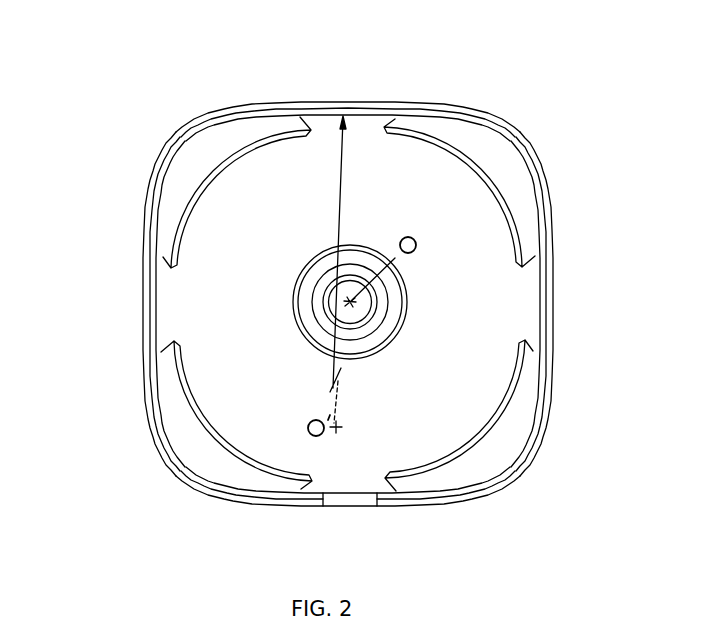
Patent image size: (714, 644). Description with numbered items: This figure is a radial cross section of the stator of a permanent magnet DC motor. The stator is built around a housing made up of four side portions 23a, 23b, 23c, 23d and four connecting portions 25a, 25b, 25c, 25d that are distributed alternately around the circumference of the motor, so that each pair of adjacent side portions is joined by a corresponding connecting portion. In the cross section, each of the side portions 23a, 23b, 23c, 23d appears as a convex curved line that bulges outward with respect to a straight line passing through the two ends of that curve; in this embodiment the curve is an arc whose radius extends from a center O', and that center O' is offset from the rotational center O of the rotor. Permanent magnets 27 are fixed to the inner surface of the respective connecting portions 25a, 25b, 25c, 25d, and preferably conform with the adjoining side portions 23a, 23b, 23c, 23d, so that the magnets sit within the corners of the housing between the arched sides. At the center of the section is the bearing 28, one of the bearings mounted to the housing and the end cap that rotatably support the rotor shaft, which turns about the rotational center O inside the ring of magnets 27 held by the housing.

The side portion 23a is at (337, 102).
The side portion 23b is at (558, 292).
The side portion 23c is at (350, 507).
The side portion 23d is at (143, 289).
The connecting portion 25a is at (519, 128).
The connecting portion 25b is at (532, 468).
The connecting portion 25c is at (167, 474).
The connecting portion 25d is at (175, 125).
The permanent magnet 27 is at (178, 188).
The bearing 28 is at (317, 309).